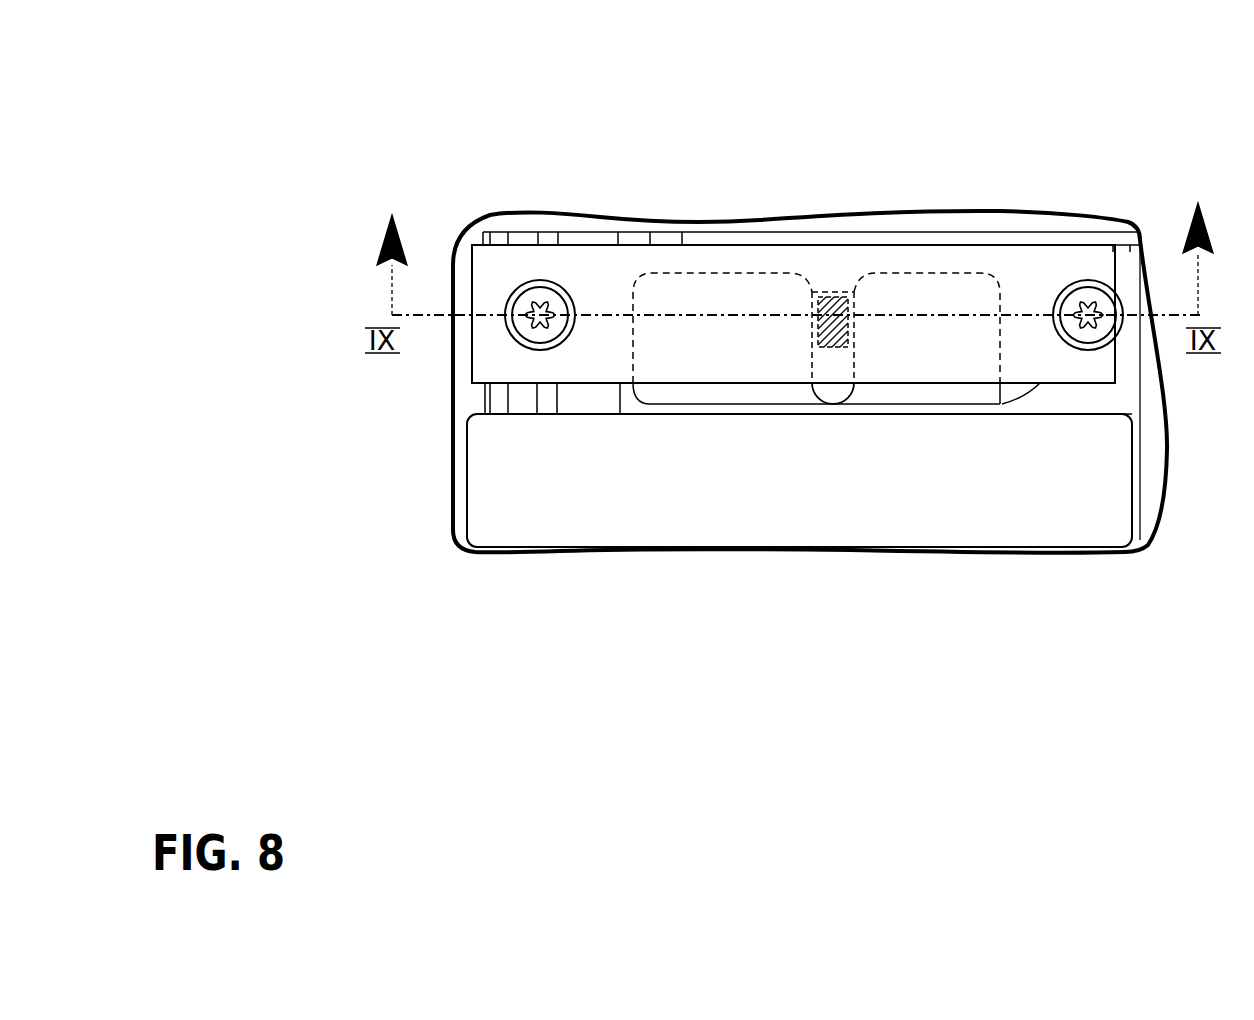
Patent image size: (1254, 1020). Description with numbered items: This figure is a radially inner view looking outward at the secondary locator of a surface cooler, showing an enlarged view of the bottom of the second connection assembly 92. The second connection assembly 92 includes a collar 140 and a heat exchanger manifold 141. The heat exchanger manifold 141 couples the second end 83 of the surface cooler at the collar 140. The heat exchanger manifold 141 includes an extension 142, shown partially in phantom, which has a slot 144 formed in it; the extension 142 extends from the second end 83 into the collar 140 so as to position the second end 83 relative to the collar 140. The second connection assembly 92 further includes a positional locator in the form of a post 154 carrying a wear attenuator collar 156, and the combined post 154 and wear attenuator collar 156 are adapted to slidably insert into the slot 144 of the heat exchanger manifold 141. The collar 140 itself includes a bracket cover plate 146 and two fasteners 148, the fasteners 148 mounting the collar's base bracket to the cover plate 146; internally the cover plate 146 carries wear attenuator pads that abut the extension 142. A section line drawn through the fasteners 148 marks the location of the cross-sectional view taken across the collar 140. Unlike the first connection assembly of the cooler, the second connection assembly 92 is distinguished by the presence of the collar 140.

The second connection assembly 92 is at (1169, 154).
The second end 83 is at (484, 406).
The collar 140 is at (765, 294).
The heat exchanger manifold 141 is at (1045, 502).
The extension 142 is at (935, 393).
The slot 144 is at (835, 393).
The bracket cover plate 146 is at (933, 280).
The fasteners 148 is at (546, 304).
The post 154 is at (825, 290).
The wear attenuator collar 156 is at (838, 290).